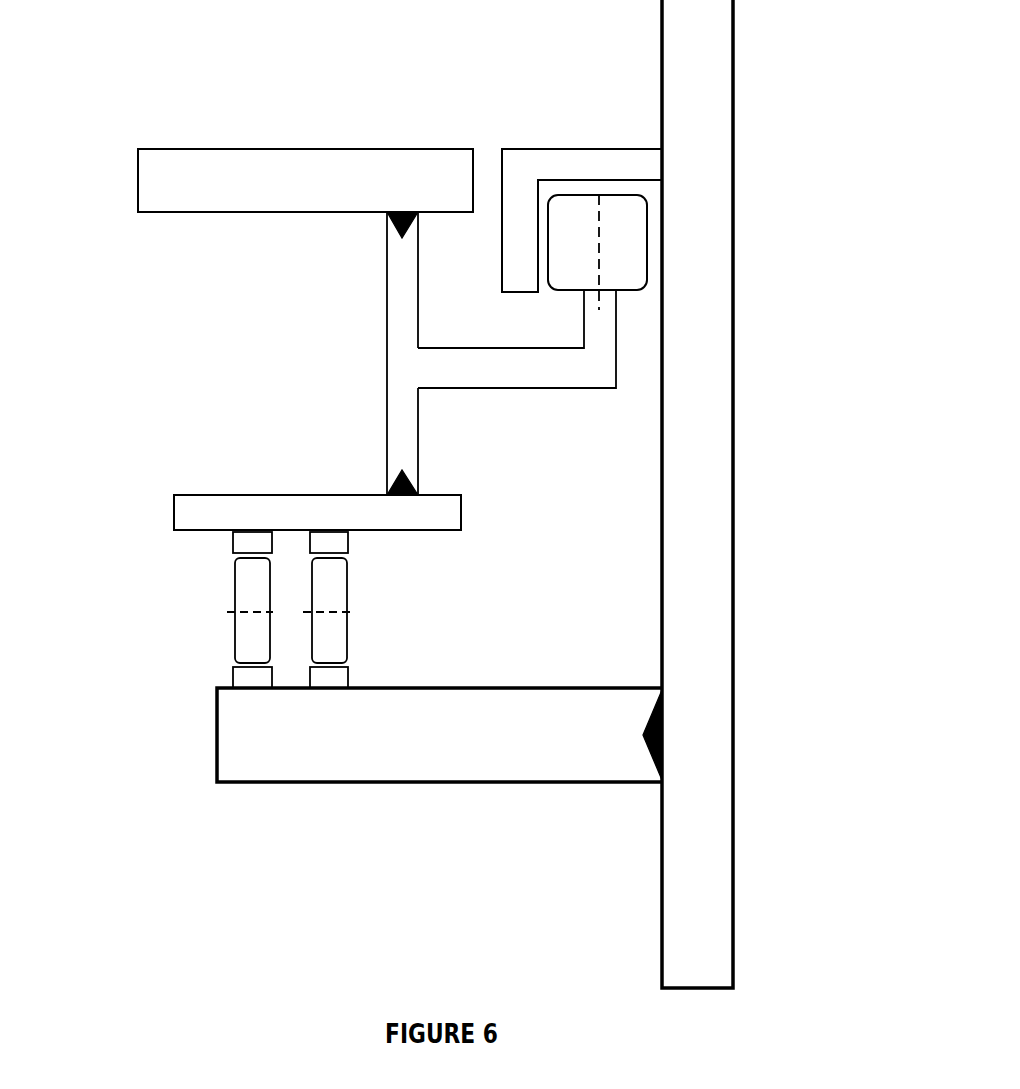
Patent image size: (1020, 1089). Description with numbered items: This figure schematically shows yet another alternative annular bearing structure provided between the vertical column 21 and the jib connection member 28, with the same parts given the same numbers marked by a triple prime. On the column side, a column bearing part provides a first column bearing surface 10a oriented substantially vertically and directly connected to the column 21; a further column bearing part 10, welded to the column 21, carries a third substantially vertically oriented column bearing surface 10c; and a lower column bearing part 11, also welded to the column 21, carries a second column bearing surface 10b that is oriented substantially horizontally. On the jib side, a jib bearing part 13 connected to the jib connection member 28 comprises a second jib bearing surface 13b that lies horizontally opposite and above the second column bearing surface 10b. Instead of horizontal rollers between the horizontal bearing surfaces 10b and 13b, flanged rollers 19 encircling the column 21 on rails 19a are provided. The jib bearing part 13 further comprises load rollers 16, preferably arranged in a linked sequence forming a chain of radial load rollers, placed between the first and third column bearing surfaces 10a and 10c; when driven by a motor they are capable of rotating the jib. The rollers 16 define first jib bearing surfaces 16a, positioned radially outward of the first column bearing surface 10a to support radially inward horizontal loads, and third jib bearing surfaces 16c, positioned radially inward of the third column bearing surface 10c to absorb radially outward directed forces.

The column bearing part 10 is at (520, 168).
The first column bearing surface 10a is at (662, 432).
The second column bearing surface 10b is at (470, 688).
The third column bearing surface 10c is at (537, 218).
The column bearing part 11 is at (490, 753).
The jib bearing part 13 is at (305, 180).
The second jib bearing surface 13b is at (440, 530).
The load rollers 16 is at (618, 252).
The first jib bearing surfaces 16a is at (645, 266).
The third jib bearing surfaces 16c is at (548, 252).
The flanged rollers 19 is at (380, 558).
The rails 19a is at (328, 535).
The vertical column 21 is at (733, 740).
The jib connection member 28 is at (138, 163).